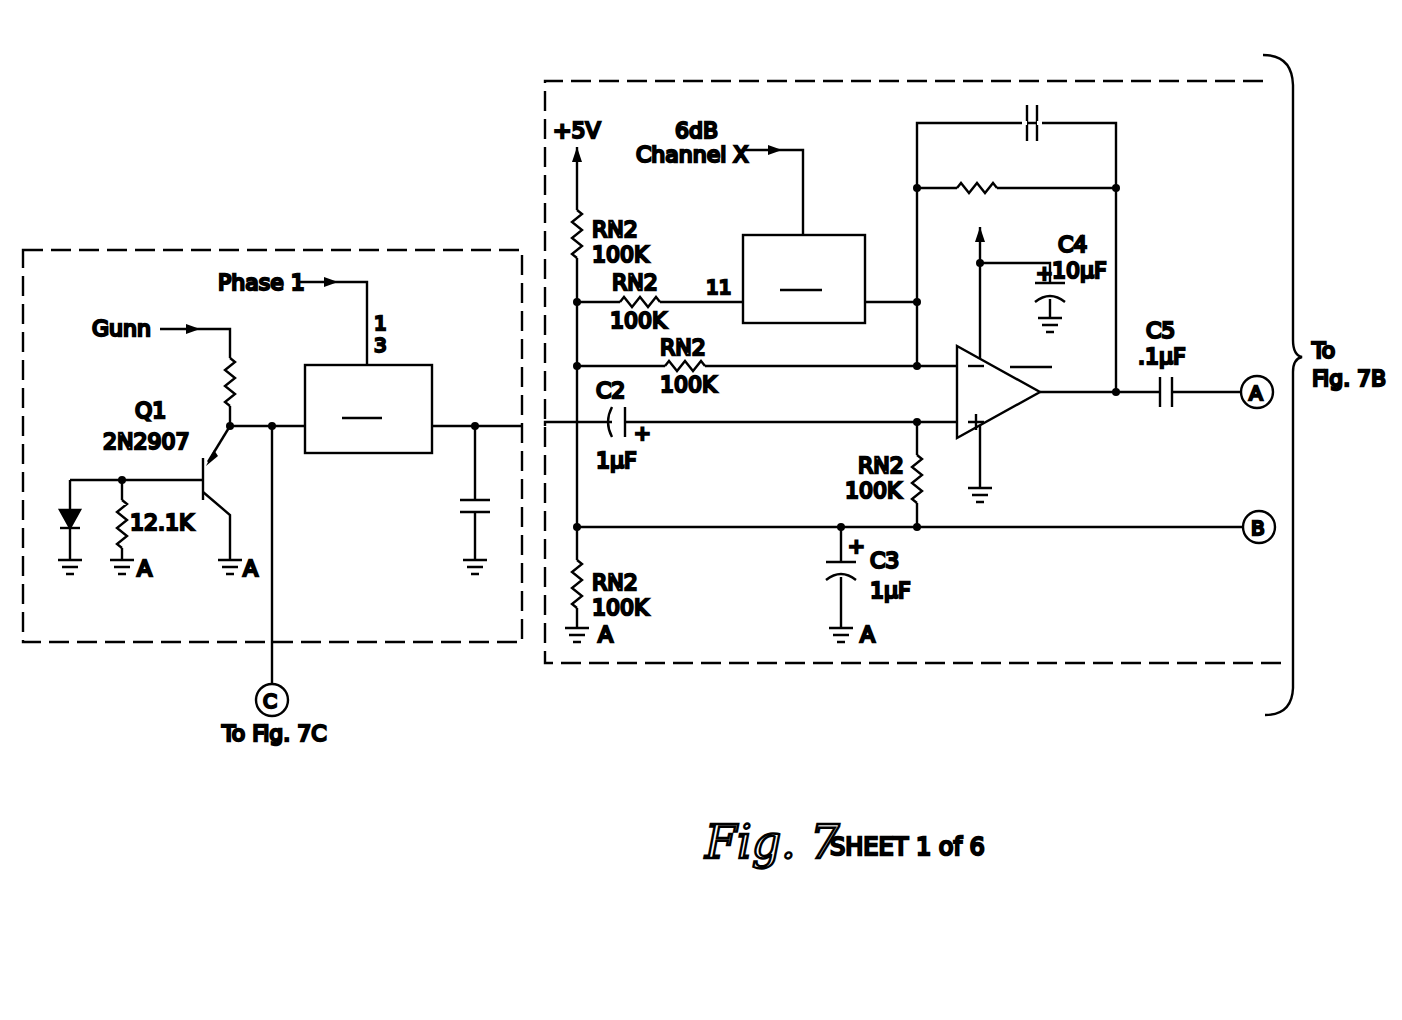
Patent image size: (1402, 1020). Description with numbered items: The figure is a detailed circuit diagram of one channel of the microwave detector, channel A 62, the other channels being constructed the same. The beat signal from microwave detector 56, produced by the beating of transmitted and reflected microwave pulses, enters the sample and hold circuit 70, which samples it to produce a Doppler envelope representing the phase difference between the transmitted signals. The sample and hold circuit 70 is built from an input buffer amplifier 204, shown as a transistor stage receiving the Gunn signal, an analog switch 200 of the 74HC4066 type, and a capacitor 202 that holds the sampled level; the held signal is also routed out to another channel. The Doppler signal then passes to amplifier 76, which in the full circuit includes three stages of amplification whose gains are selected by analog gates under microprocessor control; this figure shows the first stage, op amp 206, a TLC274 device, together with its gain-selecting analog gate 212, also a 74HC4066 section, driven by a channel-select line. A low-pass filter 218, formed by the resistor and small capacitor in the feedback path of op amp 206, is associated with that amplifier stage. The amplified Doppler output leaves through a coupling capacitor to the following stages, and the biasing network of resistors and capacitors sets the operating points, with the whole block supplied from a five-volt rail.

The microwave detector 56 is at (68, 508).
The channel A 62 is at (960, 756).
The sample and hold circuit 70 is at (203, 250).
The amplifier 76 is at (542, 178).
The analog switch 200 is at (413, 365).
The capacitor 202 is at (447, 506).
The input buffer amplifier 204 is at (240, 368).
The op amp 206 is at (985, 428).
The analog gate 212 is at (772, 235).
The low-pass filter 218 is at (1118, 290).